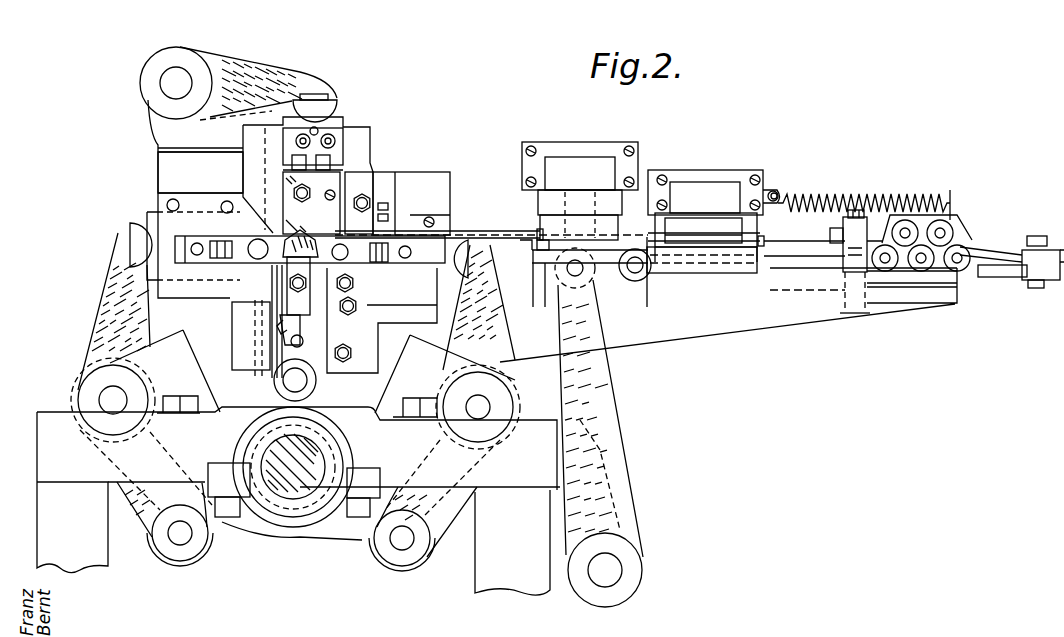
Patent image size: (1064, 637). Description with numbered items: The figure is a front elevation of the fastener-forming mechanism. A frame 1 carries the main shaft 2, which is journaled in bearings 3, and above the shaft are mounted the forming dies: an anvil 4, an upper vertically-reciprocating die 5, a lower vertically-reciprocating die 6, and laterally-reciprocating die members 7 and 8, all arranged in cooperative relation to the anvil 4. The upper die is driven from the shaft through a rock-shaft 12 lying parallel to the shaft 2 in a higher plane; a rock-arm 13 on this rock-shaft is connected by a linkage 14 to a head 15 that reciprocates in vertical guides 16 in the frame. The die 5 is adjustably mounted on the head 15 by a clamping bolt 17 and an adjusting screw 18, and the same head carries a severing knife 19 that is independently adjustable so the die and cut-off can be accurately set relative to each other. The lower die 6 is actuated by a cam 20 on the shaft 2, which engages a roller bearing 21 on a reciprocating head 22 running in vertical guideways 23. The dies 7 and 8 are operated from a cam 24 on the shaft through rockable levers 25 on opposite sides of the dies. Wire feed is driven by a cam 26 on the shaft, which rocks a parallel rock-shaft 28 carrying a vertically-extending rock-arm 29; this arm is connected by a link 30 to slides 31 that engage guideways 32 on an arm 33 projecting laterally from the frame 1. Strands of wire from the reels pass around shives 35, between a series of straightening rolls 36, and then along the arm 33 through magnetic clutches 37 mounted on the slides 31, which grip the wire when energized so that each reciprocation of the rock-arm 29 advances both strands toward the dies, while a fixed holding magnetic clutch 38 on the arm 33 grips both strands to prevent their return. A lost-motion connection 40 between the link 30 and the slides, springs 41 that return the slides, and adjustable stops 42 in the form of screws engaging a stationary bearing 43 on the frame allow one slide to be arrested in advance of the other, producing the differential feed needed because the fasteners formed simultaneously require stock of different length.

The frame 1 is at (518, 487).
The main shaft 2 is at (292, 493).
The bearings 3 is at (307, 522).
The anvil 4 is at (287, 230).
The upper vertically-reciprocating die 5 is at (335, 223).
The lower vertically-reciprocating die 6 is at (310, 297).
The laterally-reciprocating die member 7 is at (243, 257).
The laterally-reciprocating die member 8 is at (349, 256).
The rock-shaft 12 is at (167, 87).
The rock-arm 13 is at (245, 72).
The linkage 14 is at (340, 105).
The head 15 is at (348, 145).
The vertical guides 16 is at (310, 190).
The clamping bolt 17 is at (312, 215).
The adjusting screw 18 is at (282, 160).
The severing knife 19 is at (380, 210).
The cam 20 is at (350, 433).
The roller bearing 21 is at (283, 383).
The reciprocating head 22 is at (280, 337).
The vertical guideways 23 is at (250, 323).
The cam 24 is at (232, 525).
The rockable levers 25 is at (160, 482).
The cam 26 is at (735, 170).
The rock-shaft 28 is at (622, 573).
The vertically-extending rock-arm 29 is at (623, 505).
The link 30 is at (590, 273).
The slide 31 is at (717, 267).
The guideways 32 is at (780, 257).
The arm 33 is at (812, 320).
The shives 35 is at (1028, 240).
The rolls 36 is at (958, 225).
The magnetic clutch 37 is at (688, 182).
The holding magnetic clutch 38 is at (573, 163).
The lost-motion connection 40 is at (643, 267).
The springs 41 is at (863, 228).
The adjustable stops 42 is at (835, 233).
The stationary bearing 43 is at (862, 228).